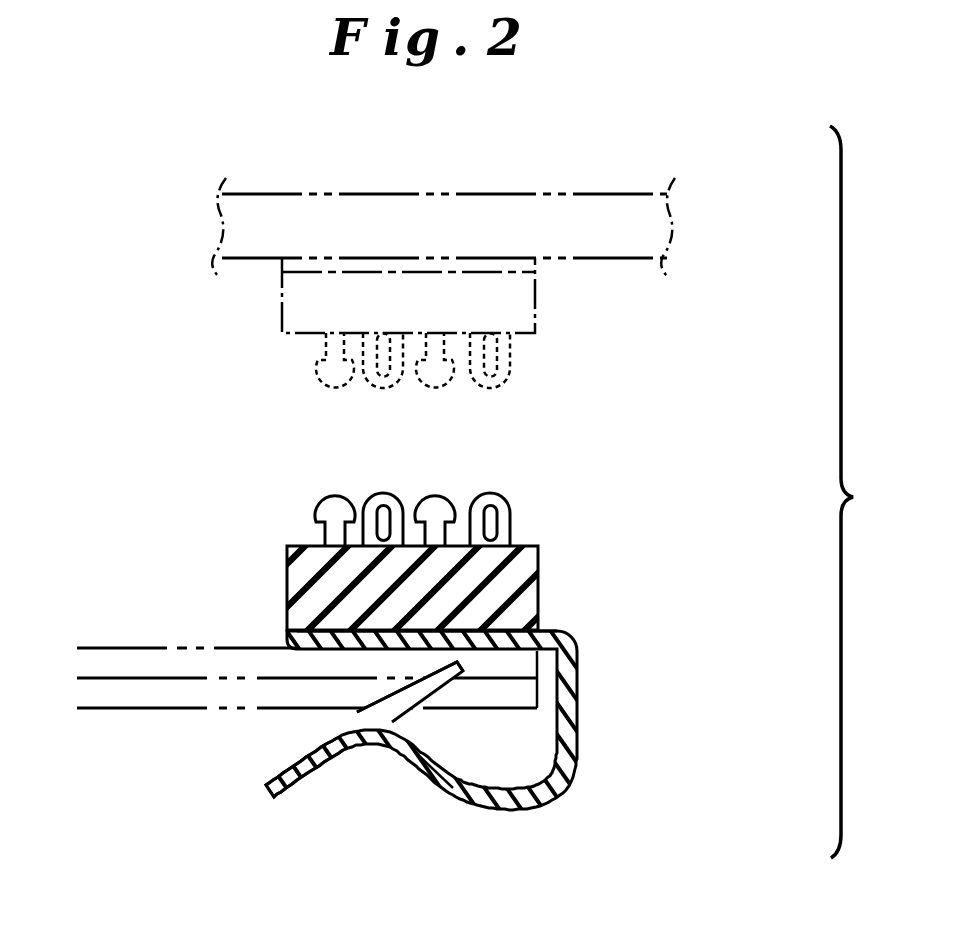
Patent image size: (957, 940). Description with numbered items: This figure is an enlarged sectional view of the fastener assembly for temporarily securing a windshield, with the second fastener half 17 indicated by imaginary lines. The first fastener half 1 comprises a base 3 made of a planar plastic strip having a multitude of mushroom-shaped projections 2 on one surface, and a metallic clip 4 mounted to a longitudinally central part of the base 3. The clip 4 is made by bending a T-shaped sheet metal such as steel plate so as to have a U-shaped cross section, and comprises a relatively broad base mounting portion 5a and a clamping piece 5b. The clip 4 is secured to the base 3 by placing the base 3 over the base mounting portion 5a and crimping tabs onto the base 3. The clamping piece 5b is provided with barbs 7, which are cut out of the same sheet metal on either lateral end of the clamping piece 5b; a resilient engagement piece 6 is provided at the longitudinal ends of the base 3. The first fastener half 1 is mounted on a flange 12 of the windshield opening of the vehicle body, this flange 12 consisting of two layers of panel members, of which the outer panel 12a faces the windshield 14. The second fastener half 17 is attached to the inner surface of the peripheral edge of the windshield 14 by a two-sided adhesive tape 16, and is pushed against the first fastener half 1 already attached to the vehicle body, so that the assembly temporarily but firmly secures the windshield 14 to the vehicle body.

The first fastener half 1 is at (423, 655).
The mushroom-shaped projections 2 is at (368, 496).
The base 3 is at (538, 567).
The metallic clip 4 is at (404, 632).
The base mounting portion 5a is at (507, 630).
The clamping piece 5b is at (337, 745).
The engaging tongue 6 is at (417, 693).
The barbs 7 is at (410, 768).
The flange 12 is at (307, 610).
The outer panel 12a is at (113, 656).
The windshield 14 is at (610, 193).
The two-sided adhesive tape 16 is at (537, 263).
The second fastener half 17 is at (444, 256).